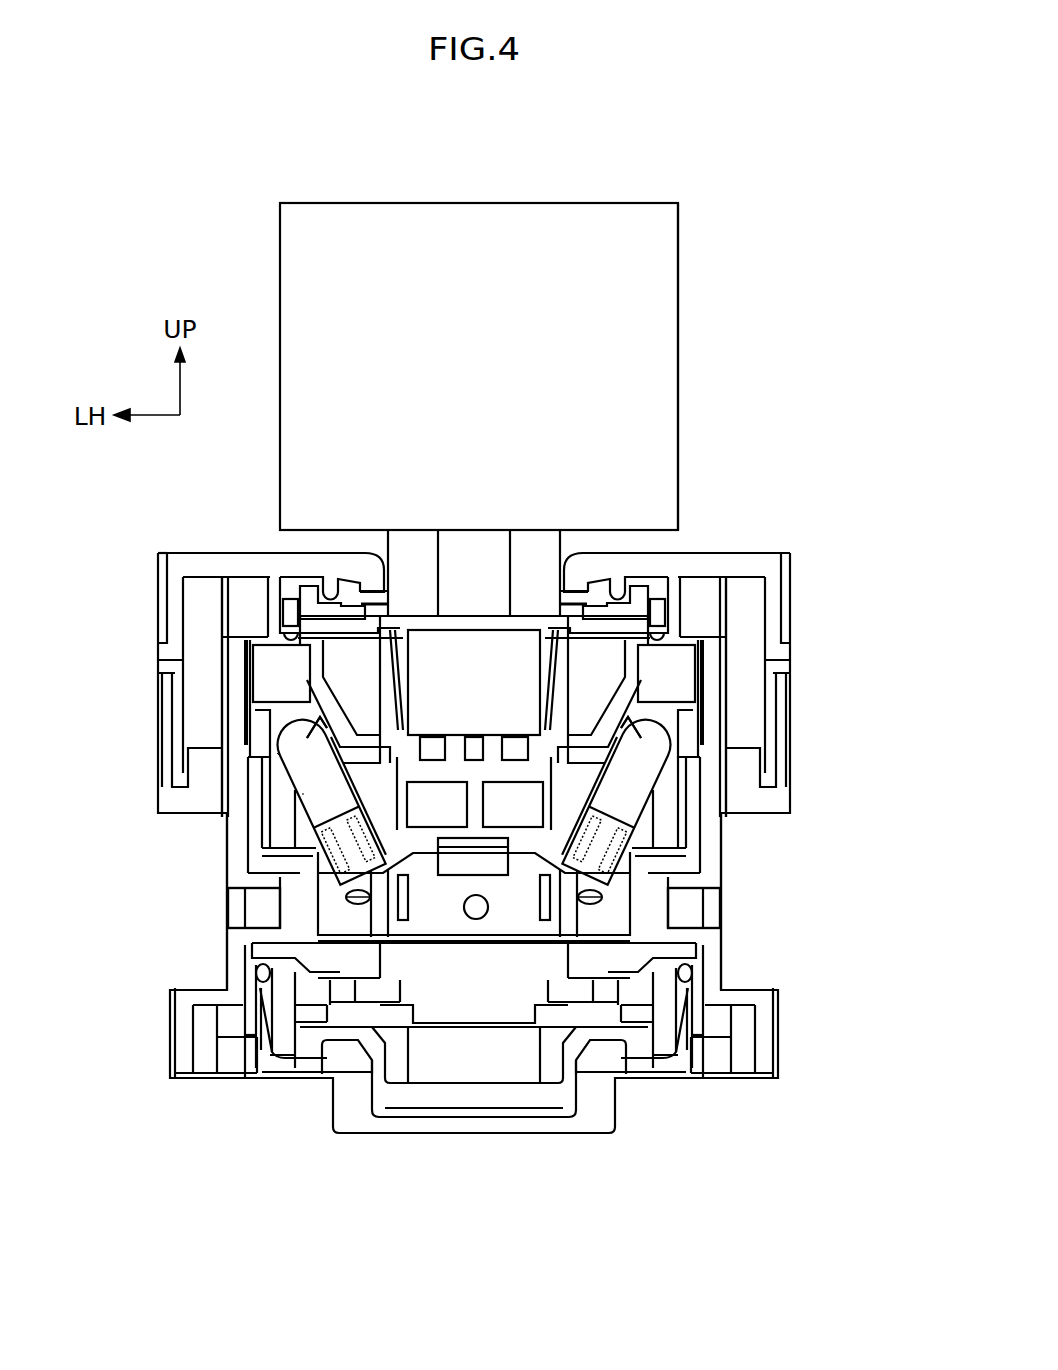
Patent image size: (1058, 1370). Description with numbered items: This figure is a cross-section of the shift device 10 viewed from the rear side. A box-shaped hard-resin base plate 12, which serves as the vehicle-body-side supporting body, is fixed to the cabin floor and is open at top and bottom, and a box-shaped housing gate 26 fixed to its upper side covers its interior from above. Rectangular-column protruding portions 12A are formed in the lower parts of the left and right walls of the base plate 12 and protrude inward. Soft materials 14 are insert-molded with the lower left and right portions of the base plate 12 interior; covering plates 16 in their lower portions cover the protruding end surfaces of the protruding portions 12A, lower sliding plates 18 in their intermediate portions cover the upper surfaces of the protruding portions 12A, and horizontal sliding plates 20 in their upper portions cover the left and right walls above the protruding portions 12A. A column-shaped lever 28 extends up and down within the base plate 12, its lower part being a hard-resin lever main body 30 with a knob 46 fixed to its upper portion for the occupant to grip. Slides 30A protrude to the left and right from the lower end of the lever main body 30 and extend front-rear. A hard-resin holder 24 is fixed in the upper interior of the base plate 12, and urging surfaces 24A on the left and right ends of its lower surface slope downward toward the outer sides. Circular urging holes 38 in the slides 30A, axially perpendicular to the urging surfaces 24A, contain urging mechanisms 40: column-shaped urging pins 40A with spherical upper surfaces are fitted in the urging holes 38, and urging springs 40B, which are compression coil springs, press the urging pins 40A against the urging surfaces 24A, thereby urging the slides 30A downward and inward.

The shift device 10 is at (198, 278).
The base plate 12 is at (475, 806).
The protruding portions 12A is at (277, 877).
The soft materials 14 is at (242, 830).
The covering plates 16 is at (283, 913).
The lower sliding plates 18 is at (297, 913).
The horizontal sliding plates 20 is at (250, 788).
The holder 24 is at (257, 630).
The urging surfaces 24A is at (313, 737).
The housing gate 26 is at (160, 552).
The lever 28 is at (680, 260).
The lever main body 30 is at (474, 1014).
The slides 30A is at (270, 873).
The urging holes 38 is at (303, 793).
The urging mechanisms 40 is at (473, 772).
The urging pins 40A is at (277, 753).
The urging springs 40B is at (348, 845).
The knob 46 is at (680, 368).